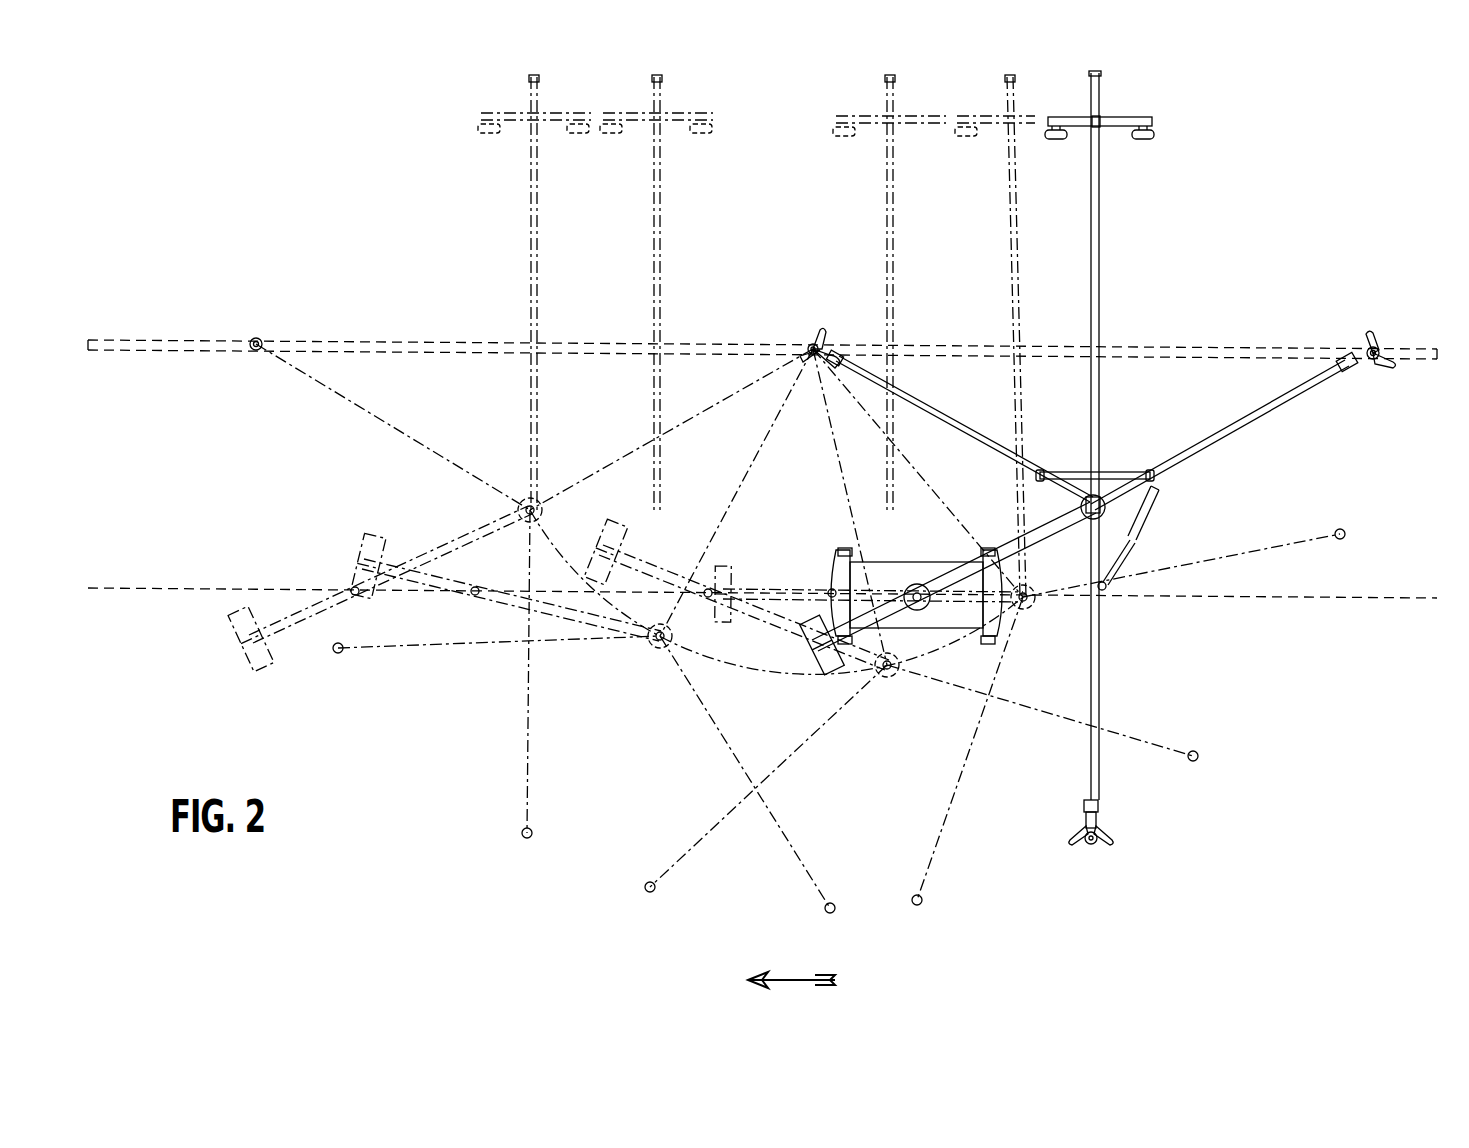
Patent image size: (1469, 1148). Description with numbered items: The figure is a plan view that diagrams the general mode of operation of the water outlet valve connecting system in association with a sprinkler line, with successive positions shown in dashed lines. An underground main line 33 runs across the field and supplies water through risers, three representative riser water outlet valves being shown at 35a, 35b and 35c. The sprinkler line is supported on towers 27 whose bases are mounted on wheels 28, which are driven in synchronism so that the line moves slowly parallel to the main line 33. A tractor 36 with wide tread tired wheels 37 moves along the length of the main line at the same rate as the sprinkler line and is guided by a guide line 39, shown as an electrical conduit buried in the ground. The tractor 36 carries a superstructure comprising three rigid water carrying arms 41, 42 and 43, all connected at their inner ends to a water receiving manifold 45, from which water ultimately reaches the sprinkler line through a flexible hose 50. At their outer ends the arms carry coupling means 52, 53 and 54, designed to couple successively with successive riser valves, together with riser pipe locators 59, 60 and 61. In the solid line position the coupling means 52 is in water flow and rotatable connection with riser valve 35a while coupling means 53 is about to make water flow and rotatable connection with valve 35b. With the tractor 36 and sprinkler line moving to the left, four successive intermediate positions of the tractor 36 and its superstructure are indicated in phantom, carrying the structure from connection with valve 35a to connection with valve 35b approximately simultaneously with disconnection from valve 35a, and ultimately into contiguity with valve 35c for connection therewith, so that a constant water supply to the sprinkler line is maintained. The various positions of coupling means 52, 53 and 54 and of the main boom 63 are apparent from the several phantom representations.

The tower 27 is at (1152, 121).
The wheels 28 is at (1052, 140).
The underground main line 33 is at (428, 344).
The riser water outlet valve 35a is at (1364, 343).
The riser water outlet valve 35b is at (805, 340).
The riser water outlet valve 35c is at (262, 340).
The tractor 36 is at (936, 564).
The wide tread tired wheels 37 is at (874, 554).
The guide line 39 is at (178, 590).
The water carrying arm 41 is at (1258, 420).
The water carrying arm 42 is at (754, 462).
The water carrying arm 43 is at (390, 430).
The water receiving manifold 45 is at (520, 500).
The flexible hose 50 is at (532, 196).
The coupling means 52 is at (522, 834).
The coupling means 53 is at (826, 342).
The coupling means 54 is at (256, 352).
The riser pipe locator 59 is at (1370, 342).
The riser pipe locator 60 is at (811, 332).
The riser pipe locator 61 is at (1108, 840).
The main boom 63 is at (448, 542).